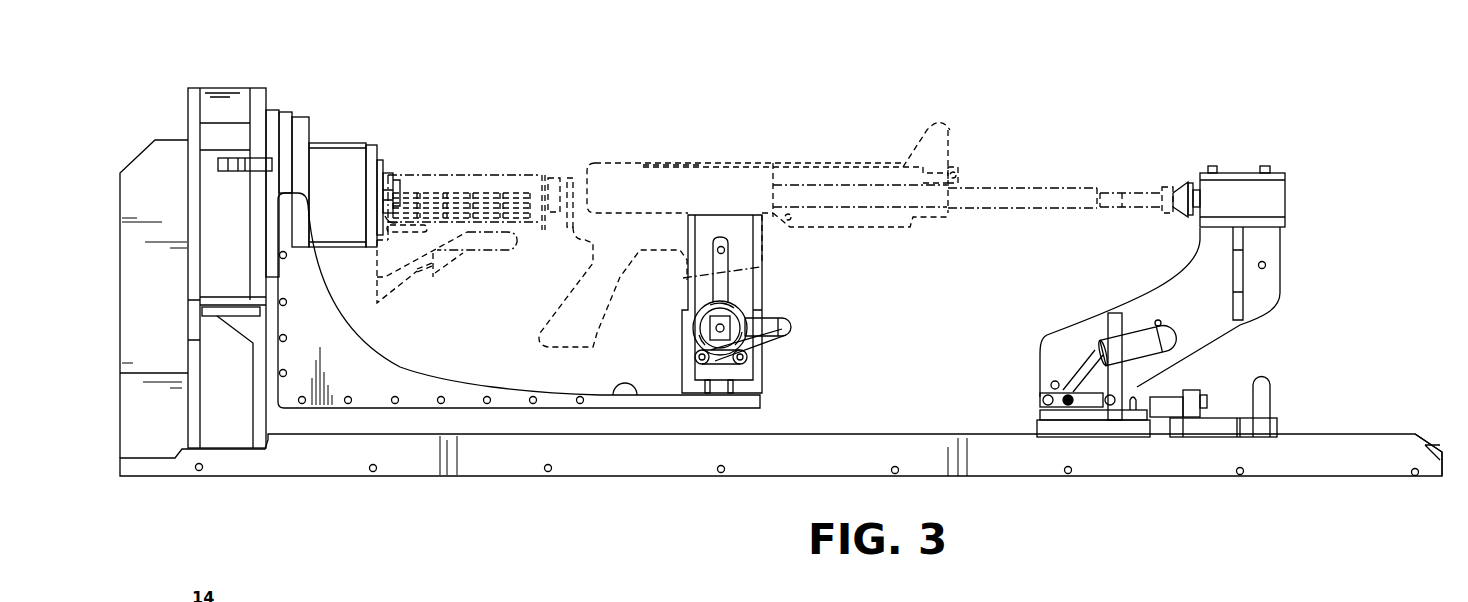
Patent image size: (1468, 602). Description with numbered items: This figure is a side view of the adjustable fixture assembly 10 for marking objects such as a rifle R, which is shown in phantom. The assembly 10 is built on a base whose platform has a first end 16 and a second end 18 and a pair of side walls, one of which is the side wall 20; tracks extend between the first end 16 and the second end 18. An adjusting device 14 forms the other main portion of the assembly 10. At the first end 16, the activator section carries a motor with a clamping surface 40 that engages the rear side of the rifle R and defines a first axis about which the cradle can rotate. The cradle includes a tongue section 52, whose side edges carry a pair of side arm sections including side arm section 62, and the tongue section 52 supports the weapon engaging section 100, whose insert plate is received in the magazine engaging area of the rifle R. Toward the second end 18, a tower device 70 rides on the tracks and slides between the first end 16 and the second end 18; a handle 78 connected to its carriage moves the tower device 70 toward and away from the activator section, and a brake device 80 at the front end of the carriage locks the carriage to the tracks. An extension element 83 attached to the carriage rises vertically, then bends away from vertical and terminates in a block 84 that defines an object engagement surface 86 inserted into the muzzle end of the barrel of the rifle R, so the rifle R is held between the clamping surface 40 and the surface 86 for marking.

The adjustable fixture assembly 10 is at (975, 103).
The rifle R is at (677, 182).
The adjusting device 14 is at (228, 84).
The first end 16 is at (125, 462).
The second end 18 is at (1443, 471).
The side wall 20 is at (773, 452).
The clamping surface 40 is at (335, 155).
The tongue section 52 is at (634, 397).
The side arm section 62 is at (367, 398).
The tower device 70 is at (1287, 247).
The handle 78 is at (1177, 338).
The brake device 80 is at (1268, 393).
The extension element 83 is at (1155, 302).
The block 84 is at (1238, 190).
The object engagement surface 86 is at (1163, 190).
The weapon engaging section 100 is at (757, 293).